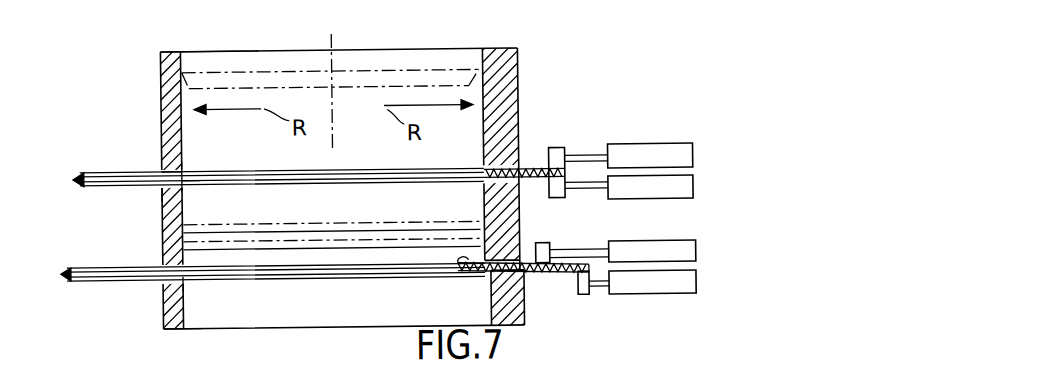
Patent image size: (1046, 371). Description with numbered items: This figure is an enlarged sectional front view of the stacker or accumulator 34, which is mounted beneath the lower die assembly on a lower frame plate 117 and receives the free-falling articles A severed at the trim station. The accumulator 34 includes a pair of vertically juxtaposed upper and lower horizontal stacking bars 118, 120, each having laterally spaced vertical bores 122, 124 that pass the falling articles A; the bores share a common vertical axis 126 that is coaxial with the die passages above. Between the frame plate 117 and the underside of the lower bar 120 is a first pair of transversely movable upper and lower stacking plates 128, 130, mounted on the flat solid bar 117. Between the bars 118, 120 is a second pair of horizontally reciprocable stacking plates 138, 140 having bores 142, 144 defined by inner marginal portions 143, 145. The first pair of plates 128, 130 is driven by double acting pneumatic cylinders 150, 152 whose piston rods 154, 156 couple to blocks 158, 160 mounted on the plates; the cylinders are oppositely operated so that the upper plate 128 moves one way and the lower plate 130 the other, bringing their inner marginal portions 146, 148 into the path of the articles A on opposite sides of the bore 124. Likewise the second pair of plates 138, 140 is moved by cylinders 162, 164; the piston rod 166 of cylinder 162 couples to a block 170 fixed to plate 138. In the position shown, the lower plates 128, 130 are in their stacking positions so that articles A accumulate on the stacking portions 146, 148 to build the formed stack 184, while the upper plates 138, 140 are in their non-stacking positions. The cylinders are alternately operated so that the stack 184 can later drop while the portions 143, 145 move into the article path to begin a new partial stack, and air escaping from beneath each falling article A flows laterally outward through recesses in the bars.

The stacker or accumulator 34 is at (120, 108).
The lower frame plate 117 is at (163, 314).
The upper stacking bar 118 is at (147, 95).
The lower stacking bar 120 is at (150, 230).
The vertical aperture or bore of upper bar 122 is at (183, 58).
The vertical aperture or bore of lower bar 124 is at (183, 207).
The vertical axis 126 is at (336, 36).
The upper stacking plate 128 is at (87, 265).
The lower stacking plate 130 is at (93, 282).
The upper stacking plate of second pair 138 is at (100, 170).
The lower stacking plate of second pair 140 is at (90, 185).
The aperture of plate 138 142 is at (183, 166).
The inner marginal portion of plate 138 143 is at (163, 163).
The aperture of plate 140 144 is at (183, 180).
The inner marginal portion of plate 140 145 is at (163, 192).
The inner marginal portion of plate 128 146 is at (187, 282).
The inner marginal portion of plate 130 148 is at (467, 262).
The cylinder 150 is at (690, 250).
The cylinder 152 is at (693, 282).
The piston rod 154 is at (582, 250).
The piston rod 156 is at (600, 290).
The block 158 is at (540, 244).
The block 160 is at (578, 283).
The cylinder 162 is at (696, 152).
The cylinder 164 is at (693, 185).
The piston rod 166 is at (588, 157).
The block 170 is at (558, 150).
The formed stack 184 is at (408, 207).
The article A is at (343, 207).